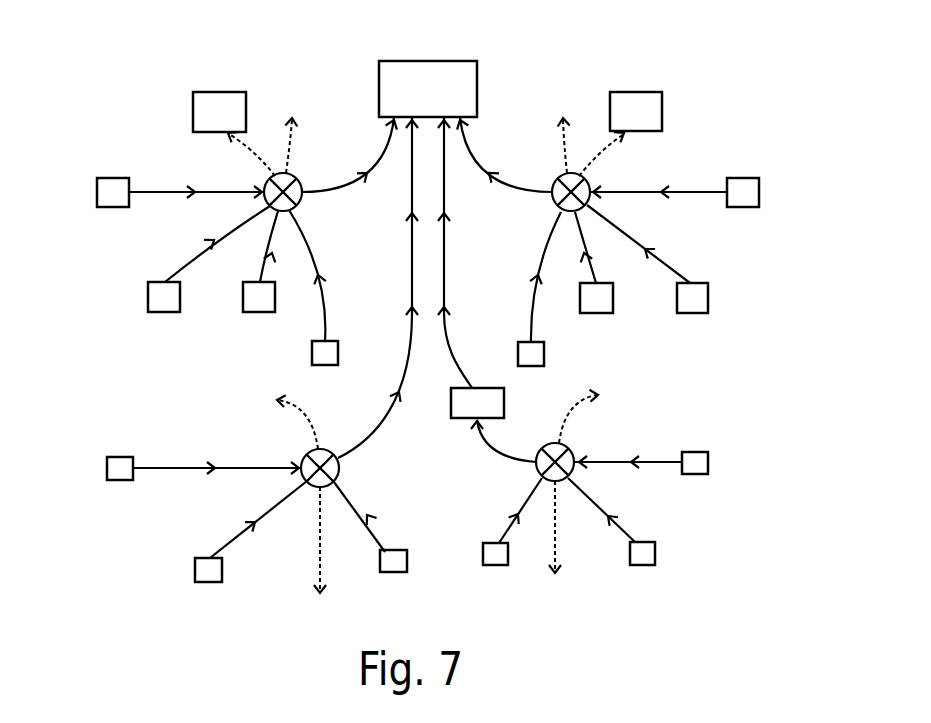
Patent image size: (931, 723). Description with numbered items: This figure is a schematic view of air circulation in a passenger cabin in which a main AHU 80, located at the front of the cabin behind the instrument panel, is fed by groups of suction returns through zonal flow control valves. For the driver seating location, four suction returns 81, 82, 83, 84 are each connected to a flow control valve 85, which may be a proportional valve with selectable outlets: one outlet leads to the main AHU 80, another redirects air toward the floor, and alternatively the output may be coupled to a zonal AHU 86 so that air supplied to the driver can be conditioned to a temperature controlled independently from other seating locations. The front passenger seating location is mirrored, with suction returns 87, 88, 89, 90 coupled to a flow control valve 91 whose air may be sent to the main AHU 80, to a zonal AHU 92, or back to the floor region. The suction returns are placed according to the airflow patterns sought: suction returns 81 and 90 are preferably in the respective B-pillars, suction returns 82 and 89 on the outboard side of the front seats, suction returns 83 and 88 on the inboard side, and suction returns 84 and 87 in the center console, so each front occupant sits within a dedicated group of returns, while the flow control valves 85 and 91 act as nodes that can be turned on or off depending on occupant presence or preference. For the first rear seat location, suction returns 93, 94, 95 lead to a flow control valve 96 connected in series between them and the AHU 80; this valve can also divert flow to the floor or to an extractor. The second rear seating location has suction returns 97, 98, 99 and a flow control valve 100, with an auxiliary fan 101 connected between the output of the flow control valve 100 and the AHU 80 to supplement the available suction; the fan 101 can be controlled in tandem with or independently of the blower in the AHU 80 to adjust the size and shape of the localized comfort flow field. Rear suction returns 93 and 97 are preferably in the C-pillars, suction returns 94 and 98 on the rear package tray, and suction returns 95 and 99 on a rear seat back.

The main AHU 80 is at (428, 61).
The suction return 81 is at (112, 178).
The suction return 82 is at (148, 297).
The suction return 83 is at (243, 300).
The suction return 84 is at (338, 353).
The flow control valve 85 is at (297, 178).
The zonal AHU 86 is at (219, 92).
The suction return 87 is at (544, 353).
The suction return 88 is at (613, 298).
The suction return 89 is at (708, 298).
The suction return 90 is at (759, 192).
The flow control valve 91 is at (558, 180).
The zonal AHU 92 is at (662, 112).
The suction return 93 is at (107, 468).
The suction return 94 is at (195, 570).
The suction return 95 is at (407, 561).
The flow control valve 96 is at (336, 452).
The suction return 97 is at (708, 463).
The suction return 98 is at (655, 553).
The suction return 99 is at (483, 555).
The flow control valve 100 is at (548, 443).
The auxiliary fan 101 is at (452, 400).